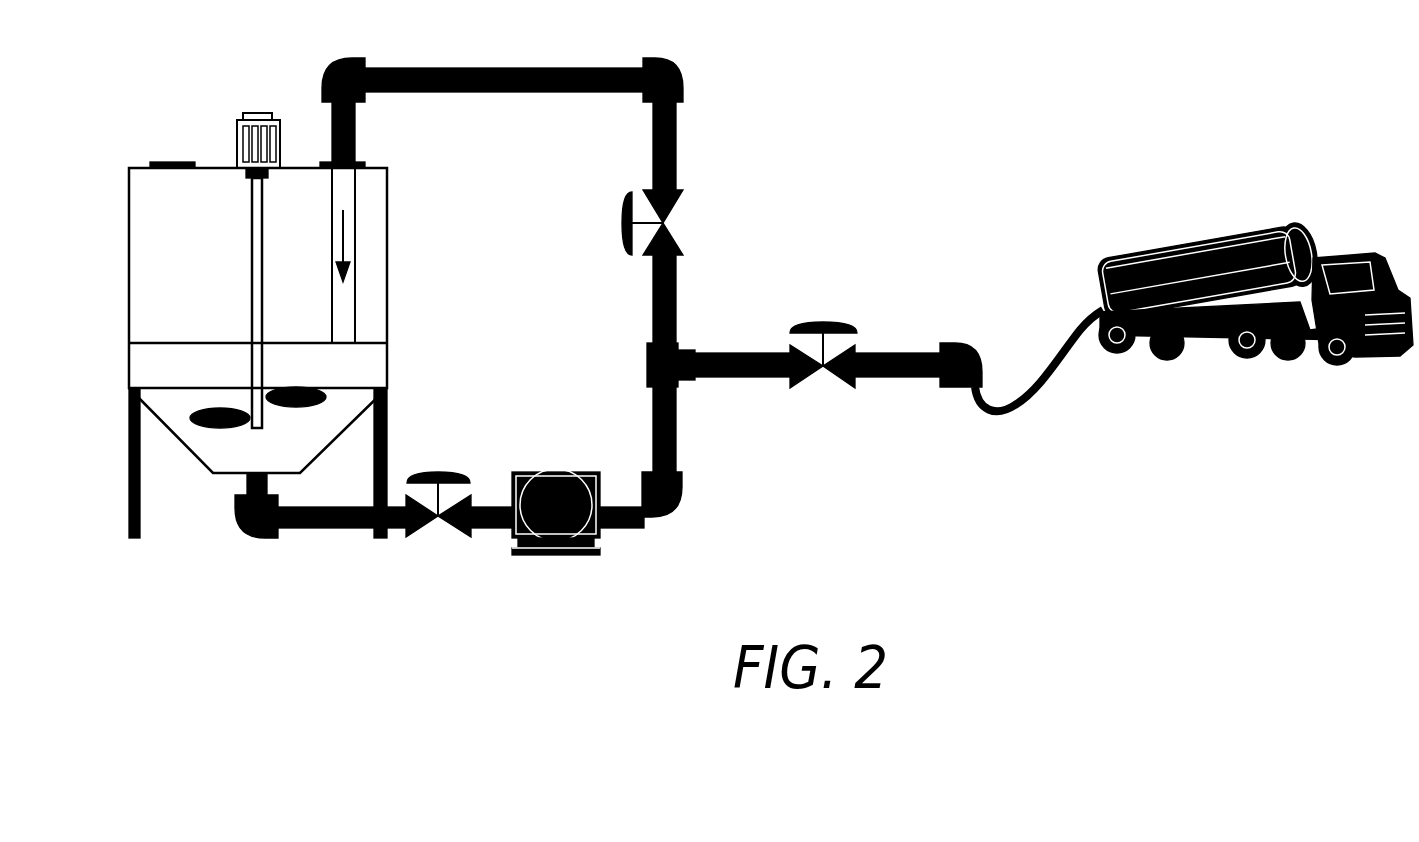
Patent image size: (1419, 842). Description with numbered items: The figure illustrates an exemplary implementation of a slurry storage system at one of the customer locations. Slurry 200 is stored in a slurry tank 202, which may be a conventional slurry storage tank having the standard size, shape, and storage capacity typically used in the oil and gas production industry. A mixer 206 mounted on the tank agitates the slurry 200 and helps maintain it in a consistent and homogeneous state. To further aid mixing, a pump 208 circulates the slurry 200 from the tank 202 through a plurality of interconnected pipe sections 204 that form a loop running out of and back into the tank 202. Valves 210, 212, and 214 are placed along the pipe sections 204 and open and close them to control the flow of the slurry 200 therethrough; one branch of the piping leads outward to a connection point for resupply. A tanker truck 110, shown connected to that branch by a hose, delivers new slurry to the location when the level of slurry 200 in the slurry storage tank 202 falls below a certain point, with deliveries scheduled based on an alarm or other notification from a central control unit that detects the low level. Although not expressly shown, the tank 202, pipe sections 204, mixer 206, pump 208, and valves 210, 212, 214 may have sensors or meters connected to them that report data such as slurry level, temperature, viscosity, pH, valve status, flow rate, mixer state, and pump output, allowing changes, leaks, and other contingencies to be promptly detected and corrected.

The tanker truck 110 is at (1240, 225).
The slurry 200 is at (235, 343).
The slurry tank 202 is at (129, 280).
The pipe sections 204 is at (527, 68).
The mixer 206 is at (237, 146).
The pump 208 is at (556, 472).
The valve 210 is at (423, 538).
The valve 212 is at (672, 213).
The valve 214 is at (830, 372).